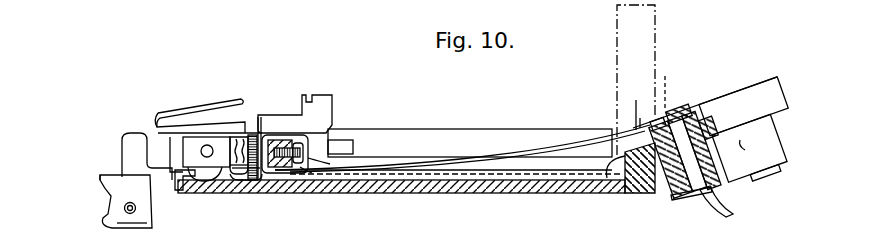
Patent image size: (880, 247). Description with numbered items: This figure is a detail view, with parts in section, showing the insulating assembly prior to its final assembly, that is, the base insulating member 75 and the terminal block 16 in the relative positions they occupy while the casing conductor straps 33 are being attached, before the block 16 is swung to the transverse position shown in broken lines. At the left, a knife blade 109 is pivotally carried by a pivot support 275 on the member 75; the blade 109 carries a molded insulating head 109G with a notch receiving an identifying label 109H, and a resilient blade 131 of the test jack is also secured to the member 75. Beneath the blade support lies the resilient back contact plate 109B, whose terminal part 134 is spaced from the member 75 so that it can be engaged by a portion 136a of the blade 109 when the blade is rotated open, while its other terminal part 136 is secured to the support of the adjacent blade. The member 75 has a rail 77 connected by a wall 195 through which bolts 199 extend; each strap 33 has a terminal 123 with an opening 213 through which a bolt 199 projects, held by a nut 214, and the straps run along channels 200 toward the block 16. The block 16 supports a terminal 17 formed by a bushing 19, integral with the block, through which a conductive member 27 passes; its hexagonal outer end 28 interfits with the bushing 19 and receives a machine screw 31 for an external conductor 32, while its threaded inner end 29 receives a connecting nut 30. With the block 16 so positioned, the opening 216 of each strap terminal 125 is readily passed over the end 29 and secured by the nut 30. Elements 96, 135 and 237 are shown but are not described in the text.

The terminal block 16 is at (658, 31).
The terminal 17 is at (748, 150).
The bushing 19 is at (665, 190).
The conductive member 27 is at (714, 153).
The outer end of conductive member 28 is at (690, 196).
The inner end of conductive member 29 is at (675, 110).
The connecting nut 30 is at (657, 118).
The machine screw 31 is at (692, 200).
The external conductor 32 is at (732, 216).
The conductor strap 33 is at (580, 163).
The base insulating member 75 is at (446, 214).
The rail 77 is at (430, 129).
The stop 96 is at (296, 174).
The knife blade 109 is at (158, 146).
The back contact 109B is at (250, 181).
The head 109G is at (112, 174).
The label 109H is at (108, 210).
The terminal of strap 123 is at (262, 132).
The terminal of strap 125 is at (713, 128).
The resilient blade 131 is at (158, 116).
The terminal part 134 is at (210, 184).
The hook bracket 135 is at (332, 103).
The terminal part 136 is at (262, 181).
The portion of blade 136a is at (190, 183).
The wall 195 is at (308, 173).
The bolt 199 is at (328, 164).
The channel 200 is at (485, 170).
The opening 213 is at (252, 135).
The nut 214 is at (282, 139).
The opening 216 is at (674, 83).
The window 237 is at (354, 147).
The pivot support 275 is at (183, 152).